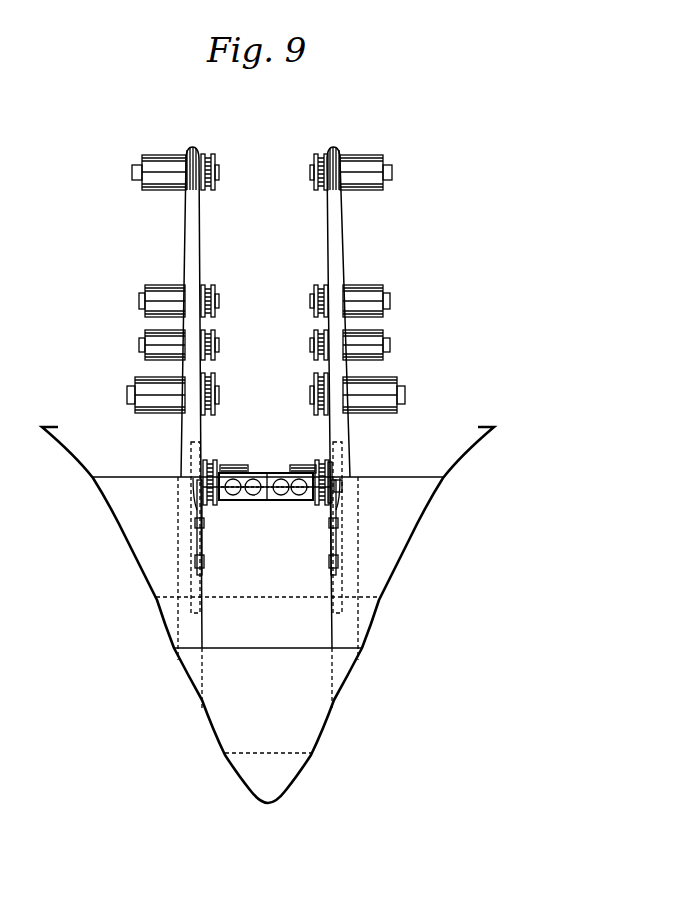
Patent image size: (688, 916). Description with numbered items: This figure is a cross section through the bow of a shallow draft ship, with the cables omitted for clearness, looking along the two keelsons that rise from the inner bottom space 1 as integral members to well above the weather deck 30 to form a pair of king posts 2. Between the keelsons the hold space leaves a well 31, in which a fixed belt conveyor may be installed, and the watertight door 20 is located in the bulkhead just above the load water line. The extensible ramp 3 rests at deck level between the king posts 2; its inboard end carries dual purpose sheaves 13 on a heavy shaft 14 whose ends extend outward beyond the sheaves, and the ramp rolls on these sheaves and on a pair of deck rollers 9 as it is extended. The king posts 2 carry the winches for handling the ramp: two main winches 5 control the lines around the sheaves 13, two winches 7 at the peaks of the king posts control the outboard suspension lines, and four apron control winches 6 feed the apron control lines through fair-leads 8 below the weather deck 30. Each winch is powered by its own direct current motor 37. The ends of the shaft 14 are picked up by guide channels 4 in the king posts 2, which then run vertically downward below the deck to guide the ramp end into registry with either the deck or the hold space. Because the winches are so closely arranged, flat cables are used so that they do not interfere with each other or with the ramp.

The inner bottom space 1 is at (280, 778).
The king posts 2 is at (203, 247).
The extensible ramp 3 is at (280, 500).
The guide channels 4 is at (194, 461).
The main winches 5 is at (219, 381).
The apron control winches 6 is at (217, 334).
The outboard suspension line winches 7 is at (215, 158).
The fair-leads 8 is at (328, 558).
The deck rollers 9 is at (245, 463).
The dual purpose sheaves 13 is at (330, 468).
The heavy shaft 14 is at (338, 485).
The watertight door 20 is at (318, 538).
The weather deck 30 is at (147, 477).
The well 31 is at (297, 722).
The direct current motors 37 is at (366, 194).